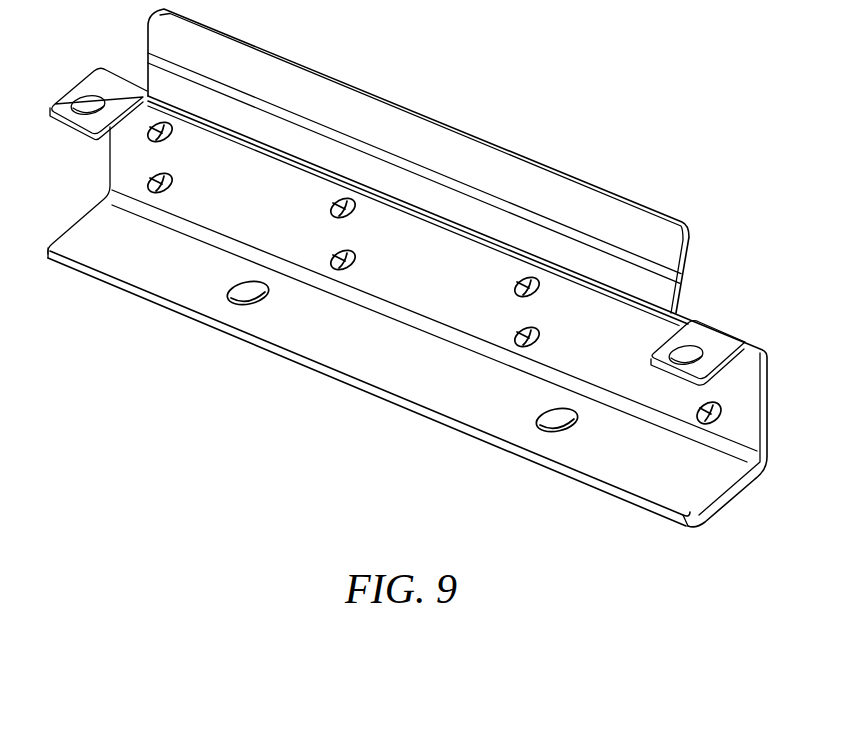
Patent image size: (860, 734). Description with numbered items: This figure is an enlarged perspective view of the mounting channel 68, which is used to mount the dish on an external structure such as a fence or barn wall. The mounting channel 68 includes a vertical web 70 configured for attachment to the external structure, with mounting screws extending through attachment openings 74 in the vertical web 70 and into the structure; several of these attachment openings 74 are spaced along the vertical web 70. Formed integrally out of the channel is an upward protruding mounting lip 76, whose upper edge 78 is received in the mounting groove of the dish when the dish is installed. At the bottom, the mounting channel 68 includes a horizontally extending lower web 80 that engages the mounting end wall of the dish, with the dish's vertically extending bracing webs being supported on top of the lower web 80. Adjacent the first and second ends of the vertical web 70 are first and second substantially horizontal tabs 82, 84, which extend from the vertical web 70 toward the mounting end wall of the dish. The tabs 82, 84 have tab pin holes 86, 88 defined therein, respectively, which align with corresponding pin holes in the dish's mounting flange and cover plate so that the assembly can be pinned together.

The mounting channel 68 is at (446, 76).
The vertical web 70 is at (568, 304).
The attachment openings 74 is at (152, 138).
The mounting lip 76 is at (560, 192).
The upper edge 78 is at (296, 60).
The lower web 80 is at (508, 414).
The first horizontal tab 82 is at (90, 86).
The second horizontal tab 84 is at (713, 358).
The tab pin hole 86 is at (86, 100).
The tab pin hole 88 is at (700, 344).